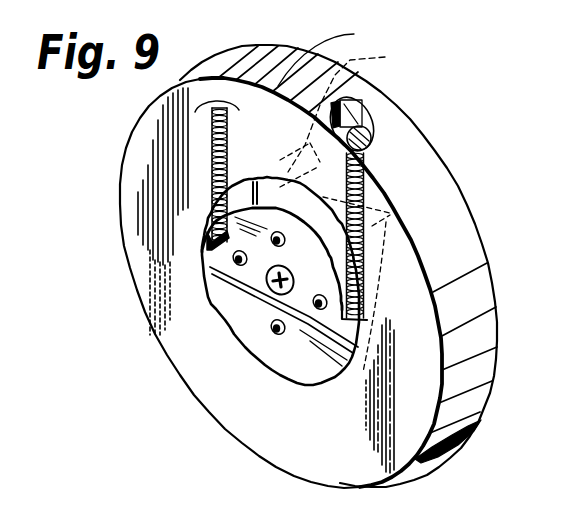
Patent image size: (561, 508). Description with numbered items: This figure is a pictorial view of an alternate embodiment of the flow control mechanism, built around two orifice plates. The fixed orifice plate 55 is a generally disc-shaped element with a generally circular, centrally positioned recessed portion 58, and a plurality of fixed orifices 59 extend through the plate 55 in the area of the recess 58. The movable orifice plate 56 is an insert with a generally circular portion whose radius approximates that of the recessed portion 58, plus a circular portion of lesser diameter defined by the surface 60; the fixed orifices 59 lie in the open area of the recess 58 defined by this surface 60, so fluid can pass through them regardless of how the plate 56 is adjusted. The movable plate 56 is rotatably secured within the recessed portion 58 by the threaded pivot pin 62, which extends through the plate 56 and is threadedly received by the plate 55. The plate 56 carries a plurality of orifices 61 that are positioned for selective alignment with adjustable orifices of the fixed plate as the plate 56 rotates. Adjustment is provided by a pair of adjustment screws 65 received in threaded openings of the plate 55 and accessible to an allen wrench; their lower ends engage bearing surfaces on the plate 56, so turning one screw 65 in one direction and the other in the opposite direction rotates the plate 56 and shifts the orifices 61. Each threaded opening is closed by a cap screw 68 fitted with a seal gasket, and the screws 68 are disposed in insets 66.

The fixed orifice plate 55 is at (342, 465).
The movable orifice plate 56 is at (312, 354).
The recessed portion 58 is at (332, 52).
The fixed orifices 59 is at (349, 206).
The surface 60 is at (380, 198).
The orifices 61 is at (277, 331).
The threaded pivot pin 62 is at (276, 296).
The adjustment screws 65 is at (208, 230).
The insets 66 is at (353, 107).
The cap screw 68 is at (370, 127).